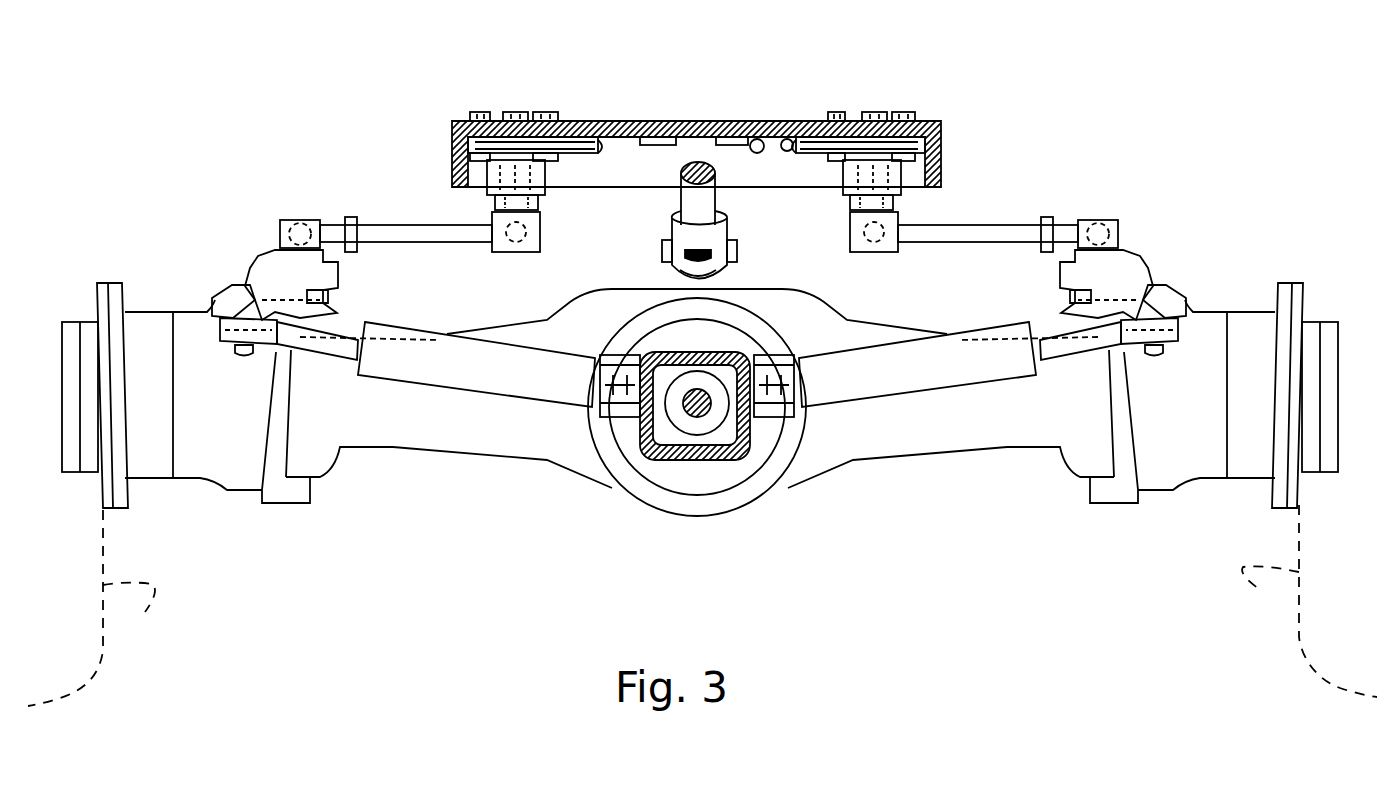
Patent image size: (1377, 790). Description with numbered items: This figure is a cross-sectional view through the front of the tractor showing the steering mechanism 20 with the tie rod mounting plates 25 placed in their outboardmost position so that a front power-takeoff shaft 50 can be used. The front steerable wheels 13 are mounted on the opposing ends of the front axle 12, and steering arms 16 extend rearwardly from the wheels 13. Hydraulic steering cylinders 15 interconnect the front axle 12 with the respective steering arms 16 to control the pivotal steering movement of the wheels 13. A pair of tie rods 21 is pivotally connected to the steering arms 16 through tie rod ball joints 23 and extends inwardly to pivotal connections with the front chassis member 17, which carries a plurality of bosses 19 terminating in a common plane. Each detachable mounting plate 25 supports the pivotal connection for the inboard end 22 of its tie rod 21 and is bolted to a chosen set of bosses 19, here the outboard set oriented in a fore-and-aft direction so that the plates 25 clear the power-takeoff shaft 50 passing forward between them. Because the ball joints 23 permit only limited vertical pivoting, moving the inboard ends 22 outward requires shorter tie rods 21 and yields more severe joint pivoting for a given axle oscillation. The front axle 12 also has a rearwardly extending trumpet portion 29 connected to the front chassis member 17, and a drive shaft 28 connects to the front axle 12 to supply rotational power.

The front axle 12 is at (382, 447).
The front steerable wheels 13 is at (145, 608).
The hydraulic steering cylinders 15 is at (468, 370).
The steering arms 16 is at (262, 275).
The front chassis member 17 is at (936, 120).
The bosses 19 is at (640, 121).
The steering mechanism 20 is at (1124, 191).
The tie rods 21 is at (390, 228).
The inboard end 22 is at (490, 214).
The tie rod ball joints 23 is at (282, 230).
The mounting plate 25 is at (562, 152).
The drive shaft 28 is at (702, 410).
The trumpet portion 29 is at (740, 455).
The power-takeoff shaft 50 is at (672, 222).